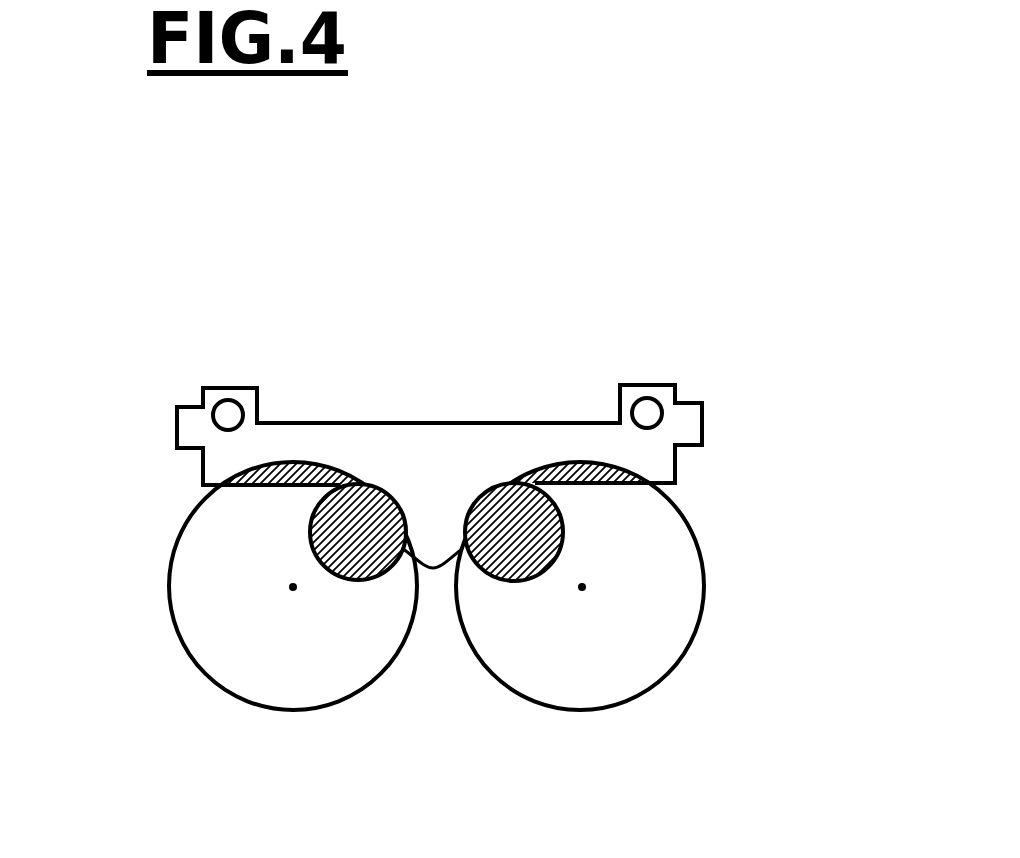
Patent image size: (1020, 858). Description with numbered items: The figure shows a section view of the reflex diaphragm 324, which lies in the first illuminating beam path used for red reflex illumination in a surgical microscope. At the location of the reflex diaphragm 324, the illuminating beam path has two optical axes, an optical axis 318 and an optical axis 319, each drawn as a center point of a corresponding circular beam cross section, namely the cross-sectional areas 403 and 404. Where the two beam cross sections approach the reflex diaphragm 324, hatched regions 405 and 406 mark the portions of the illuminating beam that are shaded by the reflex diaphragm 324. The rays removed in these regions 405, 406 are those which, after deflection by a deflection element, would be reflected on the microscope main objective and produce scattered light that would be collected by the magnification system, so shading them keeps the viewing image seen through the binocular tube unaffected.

The reflex diaphragm 324 is at (468, 440).
The cross-sectional area 403 is at (277, 680).
The cross-sectional area 404 is at (625, 678).
The region 405 is at (312, 534).
The region 406 is at (562, 530).
The optical axis 318 is at (290, 590).
The optical axis 319 is at (585, 590).